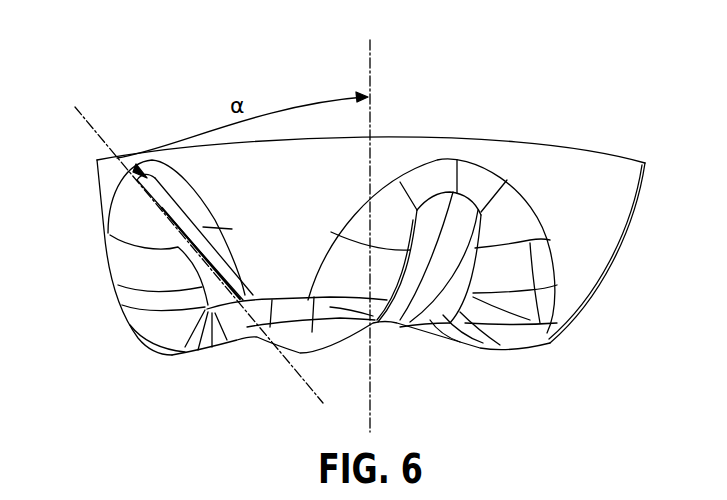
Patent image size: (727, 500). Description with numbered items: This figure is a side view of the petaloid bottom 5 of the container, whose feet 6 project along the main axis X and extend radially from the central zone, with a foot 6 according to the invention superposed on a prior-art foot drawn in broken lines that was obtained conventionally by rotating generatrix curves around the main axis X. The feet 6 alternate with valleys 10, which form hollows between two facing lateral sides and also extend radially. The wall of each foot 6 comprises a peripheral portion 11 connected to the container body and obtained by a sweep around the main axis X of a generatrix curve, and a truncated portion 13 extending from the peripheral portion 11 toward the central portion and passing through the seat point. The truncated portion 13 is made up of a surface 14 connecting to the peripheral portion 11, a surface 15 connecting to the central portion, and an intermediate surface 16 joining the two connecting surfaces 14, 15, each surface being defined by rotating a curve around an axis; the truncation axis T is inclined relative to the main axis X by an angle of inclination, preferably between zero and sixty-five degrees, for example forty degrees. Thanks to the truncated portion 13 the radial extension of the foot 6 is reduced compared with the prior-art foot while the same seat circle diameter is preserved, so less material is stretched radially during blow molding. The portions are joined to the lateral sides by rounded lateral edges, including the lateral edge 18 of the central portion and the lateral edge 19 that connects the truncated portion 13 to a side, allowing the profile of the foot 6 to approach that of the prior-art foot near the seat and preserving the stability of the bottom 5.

The bottom 5 is at (366, 232).
The foot 6 is at (531, 364).
The valley 10 is at (406, 349).
The peripheral portion 11 is at (97, 210).
The truncated portion 13 is at (360, 288).
The surface for connecting to the peripheral portion 14 is at (127, 317).
The surface for connecting to the central portion 15 is at (187, 360).
The intermediate surface 16 is at (150, 340).
The rounded lateral edge 18 is at (540, 263).
The rounded lateral edge 19 is at (510, 337).
The truncation axis T is at (80, 123).
The main axis X is at (373, 50).